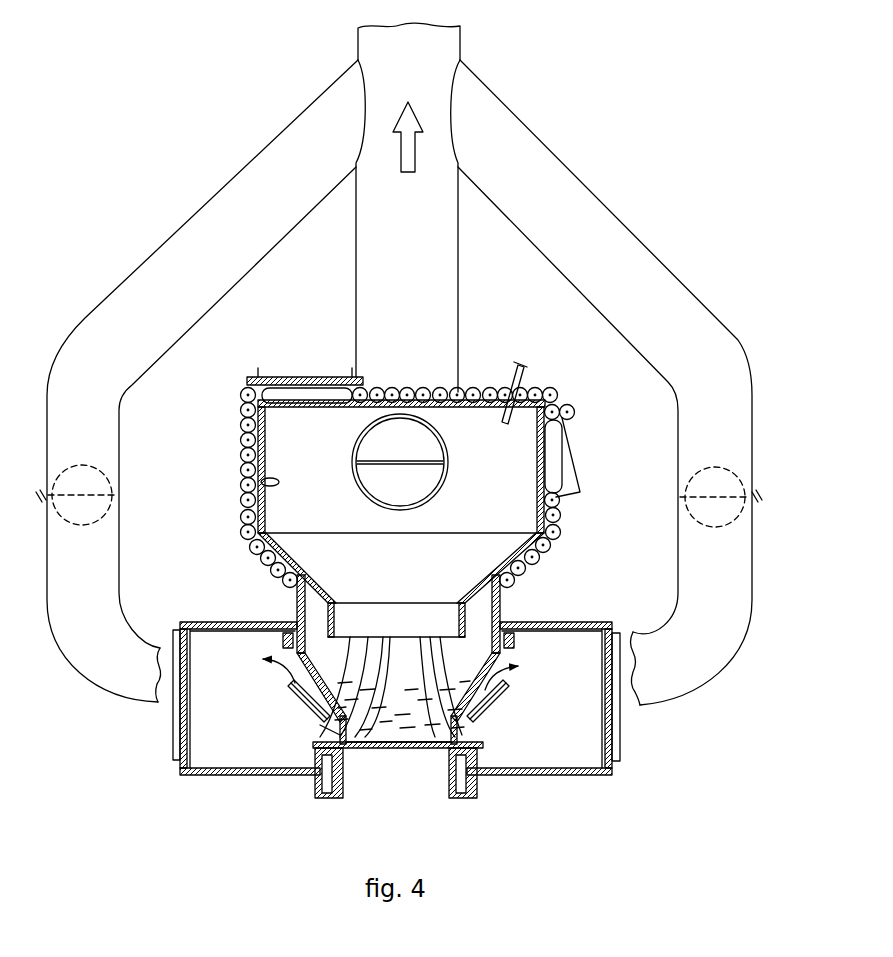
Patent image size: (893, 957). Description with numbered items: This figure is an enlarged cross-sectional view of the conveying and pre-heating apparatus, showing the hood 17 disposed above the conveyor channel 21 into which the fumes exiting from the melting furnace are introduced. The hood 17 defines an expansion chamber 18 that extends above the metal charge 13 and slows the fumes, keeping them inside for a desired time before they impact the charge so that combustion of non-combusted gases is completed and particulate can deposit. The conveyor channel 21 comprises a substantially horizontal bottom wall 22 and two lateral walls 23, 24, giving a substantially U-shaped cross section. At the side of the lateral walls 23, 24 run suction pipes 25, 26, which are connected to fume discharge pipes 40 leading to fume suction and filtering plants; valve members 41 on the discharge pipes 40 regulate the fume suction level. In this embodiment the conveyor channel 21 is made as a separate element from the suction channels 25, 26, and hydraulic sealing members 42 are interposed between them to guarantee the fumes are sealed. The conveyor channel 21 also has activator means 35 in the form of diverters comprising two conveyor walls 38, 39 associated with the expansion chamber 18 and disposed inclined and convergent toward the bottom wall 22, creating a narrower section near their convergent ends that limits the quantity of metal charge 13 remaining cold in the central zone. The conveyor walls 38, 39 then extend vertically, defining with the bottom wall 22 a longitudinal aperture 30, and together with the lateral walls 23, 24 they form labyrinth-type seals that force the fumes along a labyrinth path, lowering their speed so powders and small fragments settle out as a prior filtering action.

The metal charge 13 is at (400, 685).
The hood 17 is at (232, 425).
The expansion chamber 18 is at (262, 482).
The conveyor channel 21 is at (415, 752).
The bottom wall 22 is at (365, 750).
The lateral wall 23 is at (317, 712).
The lateral wall 24 is at (480, 715).
The suction pipe 25 is at (230, 775).
The suction pipe 26 is at (577, 775).
The aperture 30 is at (313, 750).
The activator means 35 is at (327, 713).
The conveyor wall 38 is at (262, 669).
The conveyor wall 39 is at (505, 665).
The fume discharge pipe 40 is at (215, 222).
The valve member 41 is at (88, 482).
The sealing member 42 is at (276, 608).